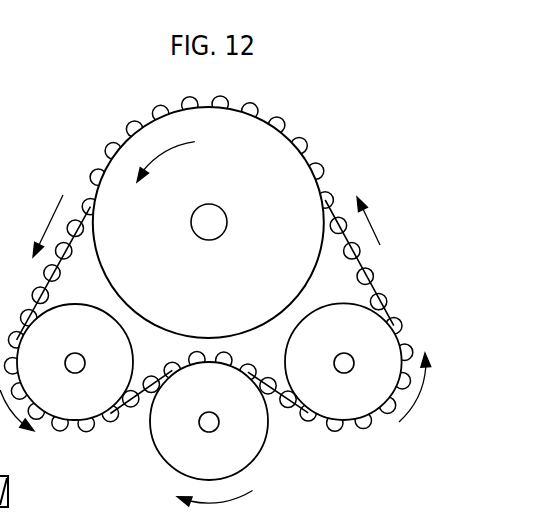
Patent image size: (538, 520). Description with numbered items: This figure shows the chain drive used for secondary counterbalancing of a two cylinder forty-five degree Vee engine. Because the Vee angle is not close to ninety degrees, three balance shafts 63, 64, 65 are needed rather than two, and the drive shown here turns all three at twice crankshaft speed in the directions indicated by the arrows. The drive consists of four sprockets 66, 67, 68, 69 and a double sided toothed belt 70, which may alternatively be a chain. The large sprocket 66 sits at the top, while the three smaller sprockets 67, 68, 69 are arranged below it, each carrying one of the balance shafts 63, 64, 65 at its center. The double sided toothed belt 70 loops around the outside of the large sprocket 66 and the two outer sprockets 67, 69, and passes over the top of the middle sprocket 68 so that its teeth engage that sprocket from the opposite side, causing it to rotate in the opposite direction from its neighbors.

The balance shaft 63 is at (100, 341).
The balance shaft 64 is at (200, 430).
The balance shaft 65 is at (339, 356).
The sprocket 66 is at (148, 132).
The sprocket 67 is at (77, 408).
The sprocket 68 is at (245, 435).
The sprocket 69 is at (352, 413).
The double sided toothed belt 70 is at (371, 292).